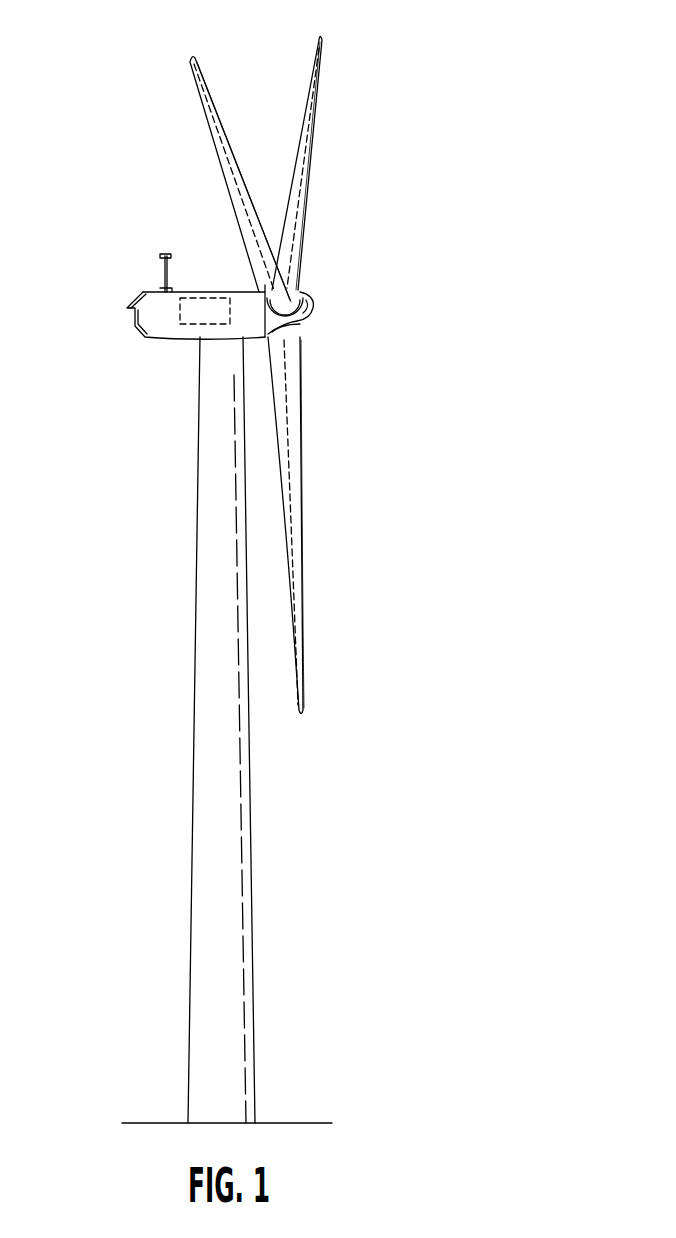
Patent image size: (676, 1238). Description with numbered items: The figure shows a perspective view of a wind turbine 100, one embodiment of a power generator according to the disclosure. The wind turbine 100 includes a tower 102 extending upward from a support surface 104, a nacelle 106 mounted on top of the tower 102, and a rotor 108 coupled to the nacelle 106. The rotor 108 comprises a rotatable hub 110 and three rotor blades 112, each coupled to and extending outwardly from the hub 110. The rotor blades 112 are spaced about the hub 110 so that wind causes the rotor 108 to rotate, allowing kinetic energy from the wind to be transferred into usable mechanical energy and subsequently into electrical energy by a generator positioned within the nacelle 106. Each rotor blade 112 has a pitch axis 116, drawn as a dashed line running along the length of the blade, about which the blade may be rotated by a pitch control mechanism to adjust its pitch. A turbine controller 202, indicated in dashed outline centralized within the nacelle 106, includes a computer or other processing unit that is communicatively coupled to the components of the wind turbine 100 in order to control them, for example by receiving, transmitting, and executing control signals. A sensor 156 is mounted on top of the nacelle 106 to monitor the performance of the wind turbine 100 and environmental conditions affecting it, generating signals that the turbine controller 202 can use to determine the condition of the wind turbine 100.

The wind turbine 100 is at (457, 131).
The tower 102 is at (233, 793).
The support surface 104 is at (167, 1122).
The nacelle 106 is at (177, 337).
The rotor 108 is at (351, 273).
The rotatable hub 110 is at (311, 308).
The rotor blade 112 is at (302, 147).
The pitch axis 116 is at (236, 190).
The sensor 156 is at (163, 280).
The turbine controller 202 is at (200, 298).